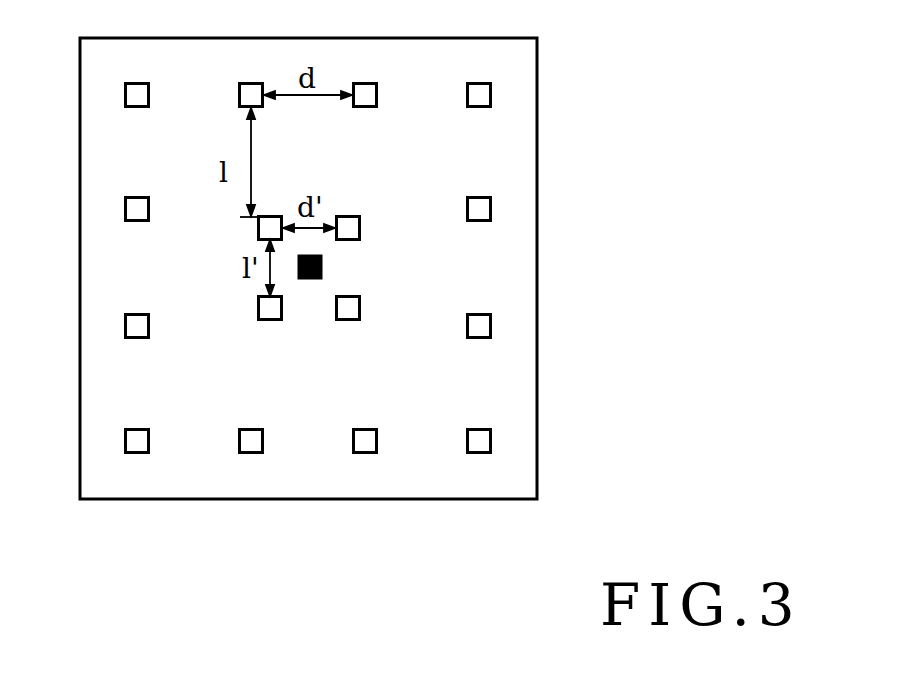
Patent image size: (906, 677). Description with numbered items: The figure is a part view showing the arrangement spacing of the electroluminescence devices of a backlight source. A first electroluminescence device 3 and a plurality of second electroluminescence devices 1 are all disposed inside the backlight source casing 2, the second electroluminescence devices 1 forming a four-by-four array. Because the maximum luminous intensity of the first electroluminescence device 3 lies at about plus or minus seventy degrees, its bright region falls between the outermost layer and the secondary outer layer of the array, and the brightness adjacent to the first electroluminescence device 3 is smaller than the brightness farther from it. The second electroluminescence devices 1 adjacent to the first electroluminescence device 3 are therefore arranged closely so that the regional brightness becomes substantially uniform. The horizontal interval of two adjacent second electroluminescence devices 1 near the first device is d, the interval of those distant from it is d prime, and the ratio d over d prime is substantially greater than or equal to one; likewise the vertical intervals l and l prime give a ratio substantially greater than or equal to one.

The second electroluminescence device 1 is at (480, 95).
The backlight source casing 2 is at (80, 218).
The first electroluminescence device 3 is at (322, 258).